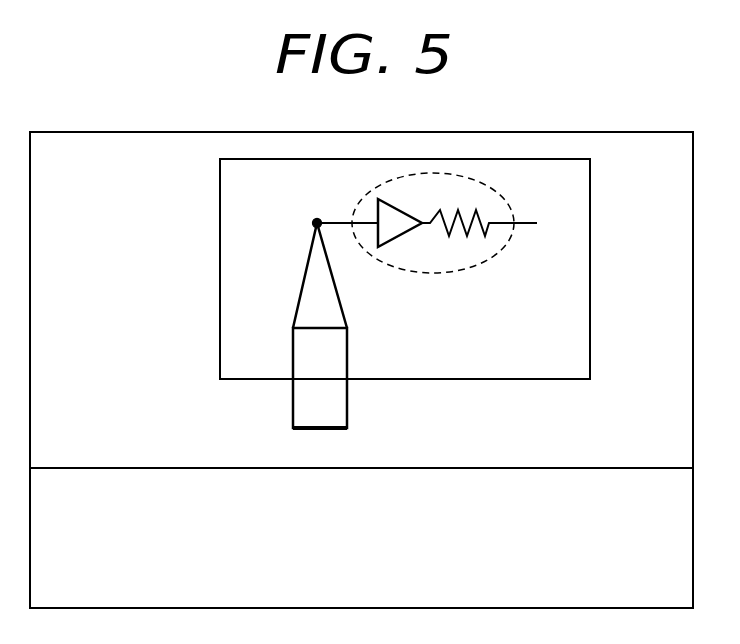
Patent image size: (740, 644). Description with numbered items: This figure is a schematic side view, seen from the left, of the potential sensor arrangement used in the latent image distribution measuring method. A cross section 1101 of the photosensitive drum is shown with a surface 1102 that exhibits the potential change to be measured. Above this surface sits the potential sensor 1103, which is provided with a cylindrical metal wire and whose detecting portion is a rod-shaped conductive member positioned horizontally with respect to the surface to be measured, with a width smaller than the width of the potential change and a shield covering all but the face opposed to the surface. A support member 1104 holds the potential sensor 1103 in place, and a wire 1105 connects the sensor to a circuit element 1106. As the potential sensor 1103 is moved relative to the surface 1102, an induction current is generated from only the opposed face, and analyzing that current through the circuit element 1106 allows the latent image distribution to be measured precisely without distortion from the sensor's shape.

The cross section of the photosensitive drum 1101 is at (562, 477).
The surface 1102 is at (185, 464).
The potential sensor 1103 is at (323, 429).
The support member 1104 is at (293, 410).
The wire 1105 is at (311, 289).
The circuit element 1106 is at (473, 267).